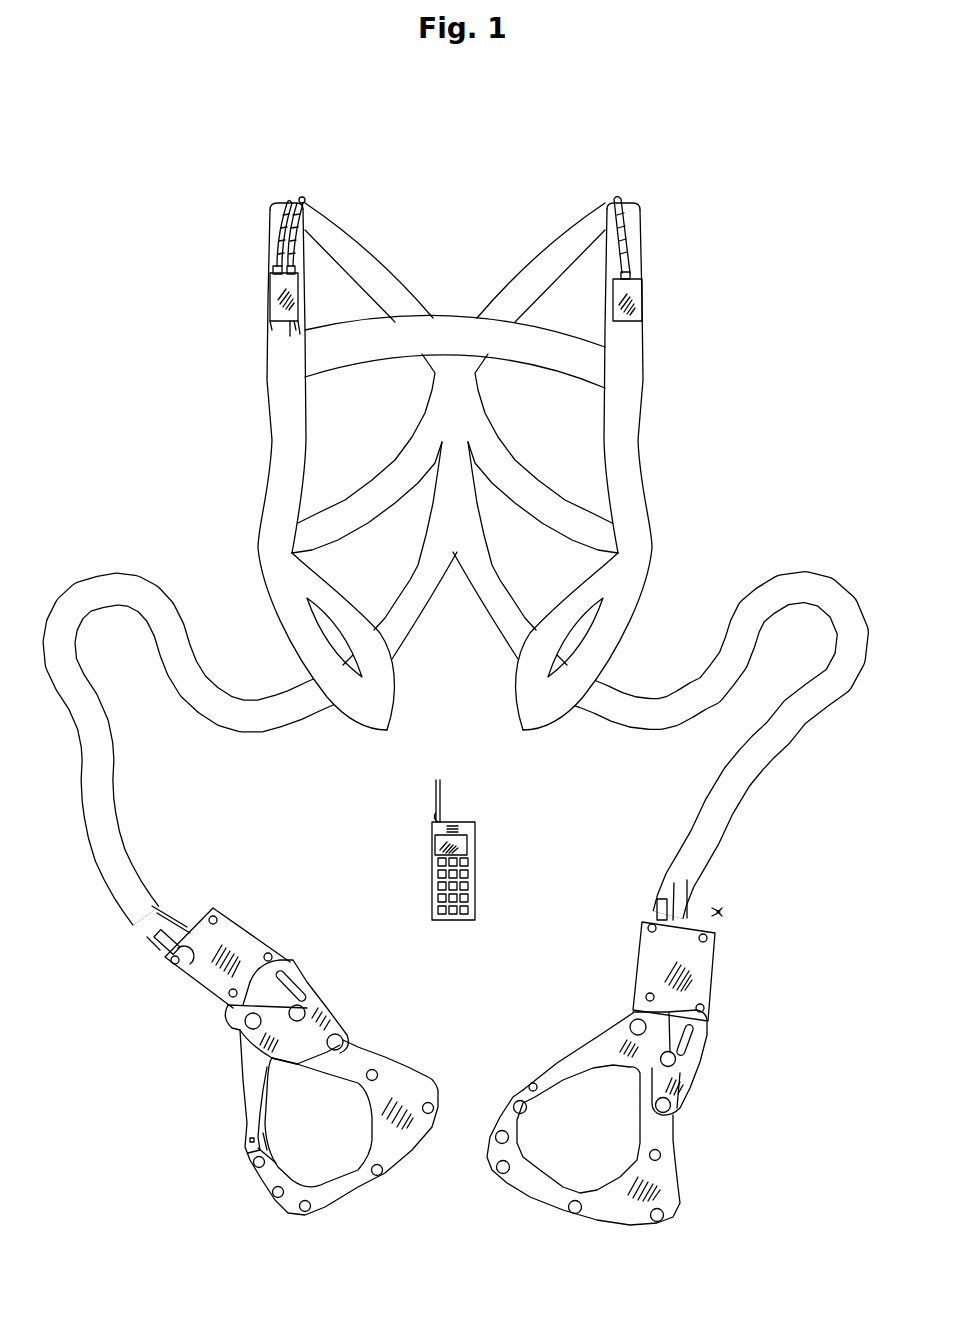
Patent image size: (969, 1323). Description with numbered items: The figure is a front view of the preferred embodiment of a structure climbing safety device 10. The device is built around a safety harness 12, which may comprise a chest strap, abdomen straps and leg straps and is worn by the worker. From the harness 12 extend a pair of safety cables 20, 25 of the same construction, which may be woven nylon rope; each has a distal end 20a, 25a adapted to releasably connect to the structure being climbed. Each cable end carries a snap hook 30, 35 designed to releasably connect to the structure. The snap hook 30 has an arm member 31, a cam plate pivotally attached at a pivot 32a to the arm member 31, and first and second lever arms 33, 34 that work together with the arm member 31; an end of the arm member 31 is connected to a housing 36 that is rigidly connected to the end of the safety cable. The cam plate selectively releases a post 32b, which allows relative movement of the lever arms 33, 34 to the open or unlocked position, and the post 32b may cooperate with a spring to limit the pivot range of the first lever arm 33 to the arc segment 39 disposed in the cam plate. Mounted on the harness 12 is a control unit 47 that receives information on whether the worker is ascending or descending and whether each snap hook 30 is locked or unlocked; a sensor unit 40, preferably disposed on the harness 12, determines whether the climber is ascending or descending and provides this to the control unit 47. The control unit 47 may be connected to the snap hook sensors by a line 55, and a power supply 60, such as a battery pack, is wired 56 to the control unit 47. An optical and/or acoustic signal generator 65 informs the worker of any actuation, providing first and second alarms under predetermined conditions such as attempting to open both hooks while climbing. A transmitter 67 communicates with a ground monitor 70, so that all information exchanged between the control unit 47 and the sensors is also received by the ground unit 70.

The safety device 10 is at (752, 156).
The safety harness 12 is at (637, 400).
The safety cable 20 is at (88, 590).
The distal end 20a is at (151, 976).
The safety cable 25 is at (843, 605).
The distal end 25a is at (720, 912).
The snap hook 30 is at (295, 997).
The arm member 31 is at (397, 1073).
The pivotal attachment 32a is at (344, 1036).
The post 32b is at (306, 1008).
The first lever arm 33 is at (248, 1078).
The second lever arm 34 is at (268, 1142).
The snap hook 35 is at (718, 1020).
The housing 36 is at (240, 930).
The arc segment 39 is at (296, 982).
The sensor unit 40 is at (303, 321).
The control unit 47 is at (264, 308).
The line 55 is at (288, 202).
The wiring 56 is at (305, 201).
The power supply 60 is at (636, 283).
The optical and/or acoustic signal generator 65 is at (271, 322).
The transmitter 67 is at (296, 324).
The ground monitor 70 is at (476, 850).